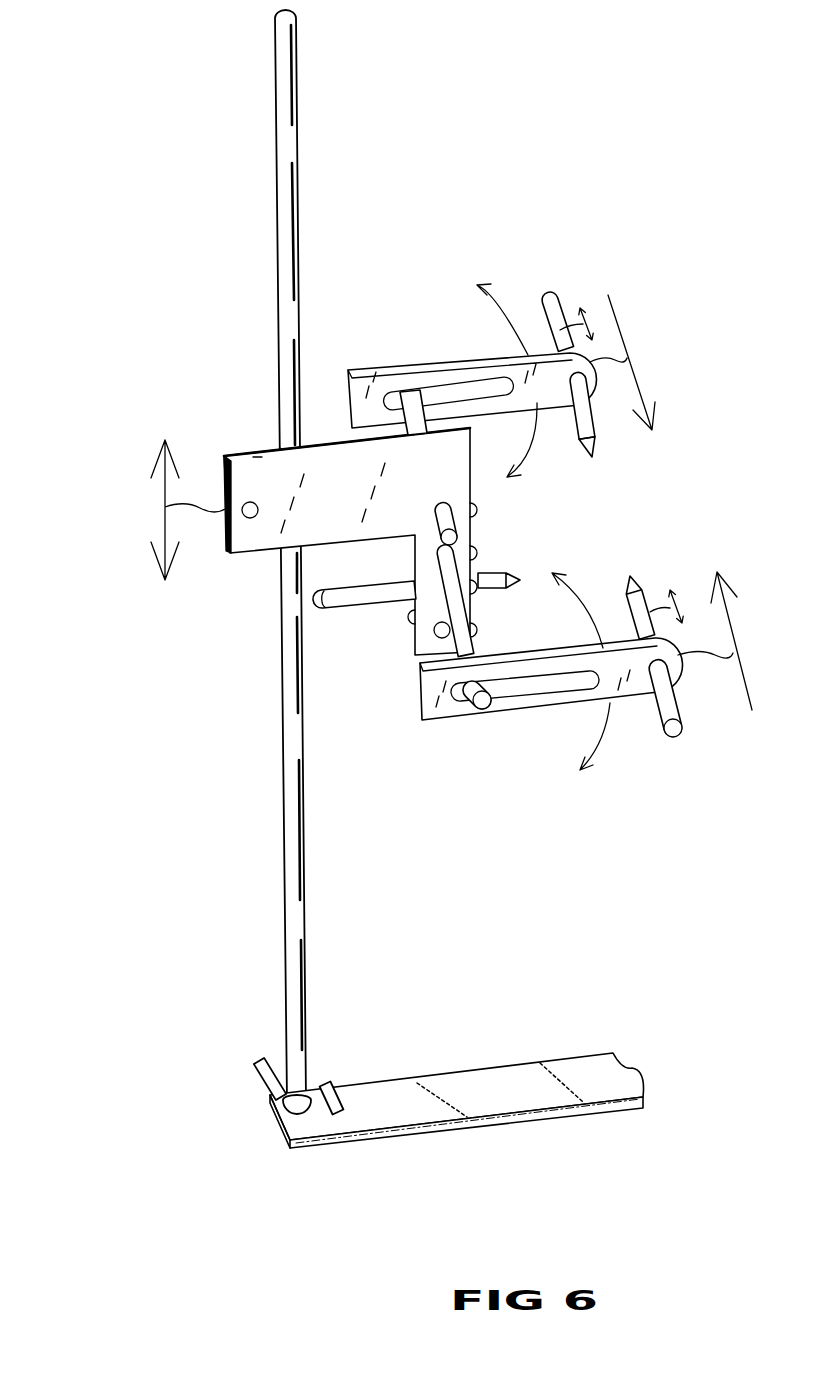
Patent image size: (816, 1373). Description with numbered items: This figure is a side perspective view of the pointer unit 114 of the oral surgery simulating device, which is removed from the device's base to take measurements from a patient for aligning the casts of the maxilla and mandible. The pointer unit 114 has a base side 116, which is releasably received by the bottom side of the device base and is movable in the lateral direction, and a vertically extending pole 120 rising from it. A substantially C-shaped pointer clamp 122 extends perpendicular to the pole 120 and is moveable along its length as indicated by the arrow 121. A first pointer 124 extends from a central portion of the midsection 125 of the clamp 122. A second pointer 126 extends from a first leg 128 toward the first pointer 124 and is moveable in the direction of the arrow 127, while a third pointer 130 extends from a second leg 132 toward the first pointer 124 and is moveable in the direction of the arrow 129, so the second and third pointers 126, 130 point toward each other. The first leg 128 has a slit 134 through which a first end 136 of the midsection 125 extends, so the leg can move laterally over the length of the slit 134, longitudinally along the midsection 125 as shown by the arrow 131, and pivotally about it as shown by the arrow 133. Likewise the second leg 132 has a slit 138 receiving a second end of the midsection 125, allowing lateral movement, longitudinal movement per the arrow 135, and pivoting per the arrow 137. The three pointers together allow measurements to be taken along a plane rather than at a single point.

The pointer unit 114 is at (141, 677).
The base side 116 is at (388, 1115).
The vertically extending pole 120 is at (293, 750).
The arrow 121 is at (165, 490).
The pointer clamp 122 is at (253, 480).
The first pointer 124 is at (498, 580).
The midsection 125 is at (455, 612).
The second pointer 126 is at (640, 597).
The arrow 127 is at (678, 602).
The first leg 128 is at (453, 712).
The arrow 129 is at (565, 325).
The third pointer 130 is at (597, 427).
The arrow 131 is at (731, 628).
The second leg 132 is at (380, 392).
The arrow 133 is at (608, 730).
The slit 134 is at (518, 685).
The arrow 135 is at (627, 355).
The first end 136 is at (482, 703).
The arrow 137 is at (505, 308).
The slit 138 is at (445, 392).